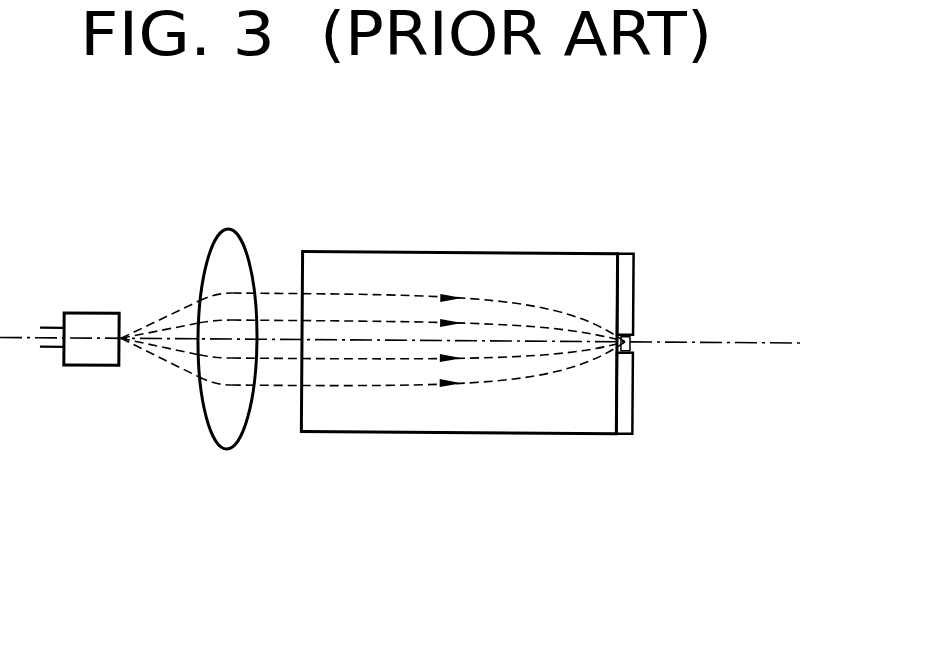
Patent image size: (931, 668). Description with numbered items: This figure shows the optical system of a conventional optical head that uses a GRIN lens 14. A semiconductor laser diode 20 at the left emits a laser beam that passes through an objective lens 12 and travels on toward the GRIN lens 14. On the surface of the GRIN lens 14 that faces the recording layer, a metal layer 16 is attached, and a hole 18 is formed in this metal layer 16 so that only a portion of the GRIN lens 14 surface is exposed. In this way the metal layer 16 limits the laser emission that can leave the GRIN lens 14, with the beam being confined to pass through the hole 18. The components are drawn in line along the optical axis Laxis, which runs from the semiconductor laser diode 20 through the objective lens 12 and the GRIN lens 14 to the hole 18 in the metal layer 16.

The objective lens 12 is at (227, 240).
The GRIN lens 14 is at (530, 262).
The metal layer 16 is at (623, 262).
The hole 18 is at (634, 346).
The semiconductor laser diode 20 is at (80, 318).
The optical axis Laxis is at (774, 340).